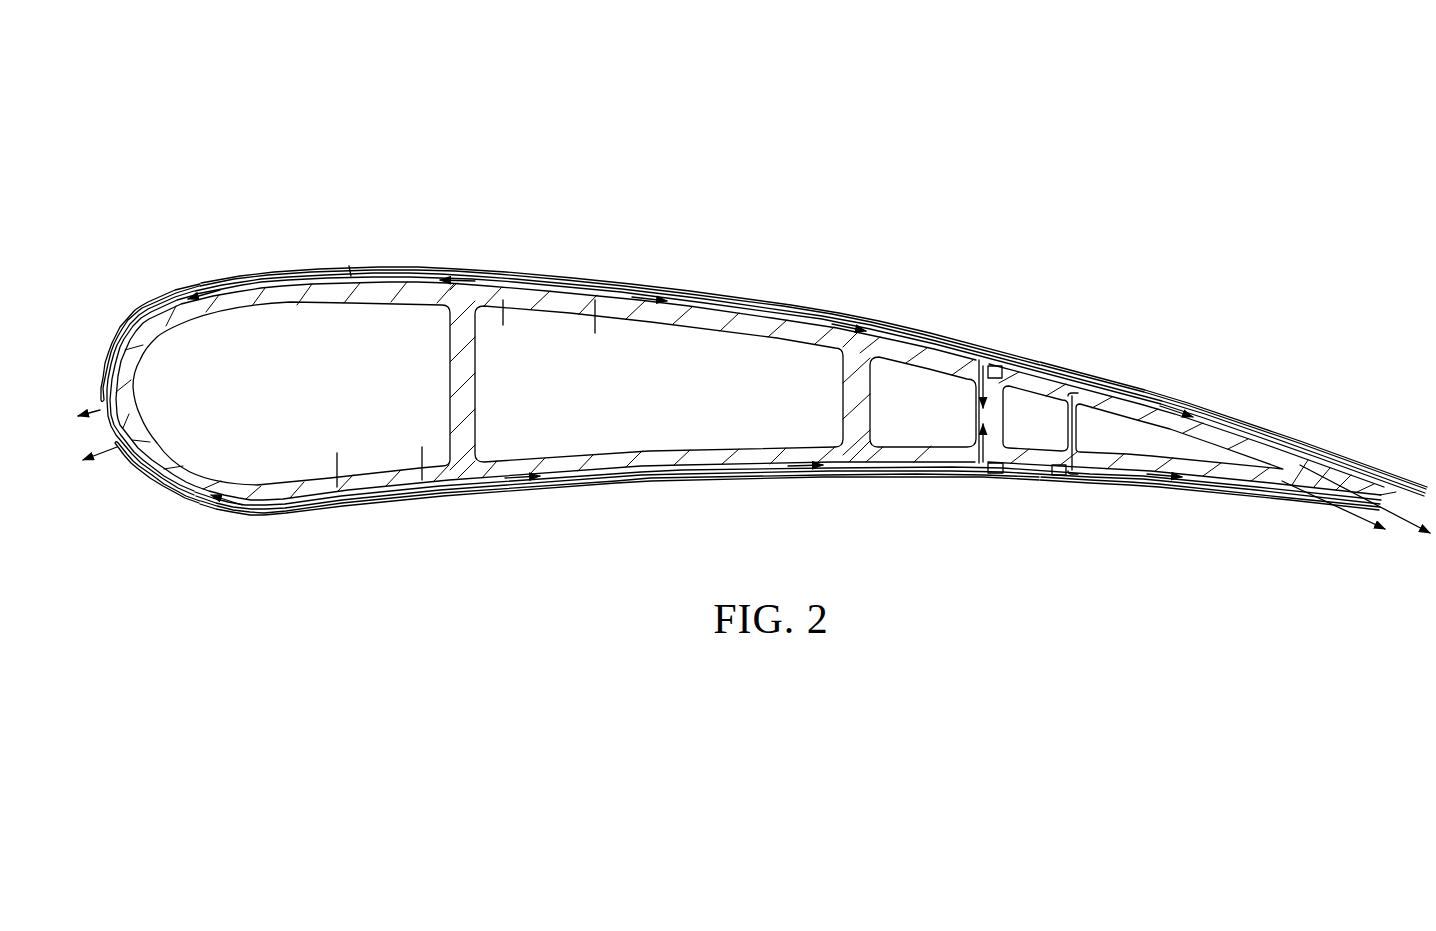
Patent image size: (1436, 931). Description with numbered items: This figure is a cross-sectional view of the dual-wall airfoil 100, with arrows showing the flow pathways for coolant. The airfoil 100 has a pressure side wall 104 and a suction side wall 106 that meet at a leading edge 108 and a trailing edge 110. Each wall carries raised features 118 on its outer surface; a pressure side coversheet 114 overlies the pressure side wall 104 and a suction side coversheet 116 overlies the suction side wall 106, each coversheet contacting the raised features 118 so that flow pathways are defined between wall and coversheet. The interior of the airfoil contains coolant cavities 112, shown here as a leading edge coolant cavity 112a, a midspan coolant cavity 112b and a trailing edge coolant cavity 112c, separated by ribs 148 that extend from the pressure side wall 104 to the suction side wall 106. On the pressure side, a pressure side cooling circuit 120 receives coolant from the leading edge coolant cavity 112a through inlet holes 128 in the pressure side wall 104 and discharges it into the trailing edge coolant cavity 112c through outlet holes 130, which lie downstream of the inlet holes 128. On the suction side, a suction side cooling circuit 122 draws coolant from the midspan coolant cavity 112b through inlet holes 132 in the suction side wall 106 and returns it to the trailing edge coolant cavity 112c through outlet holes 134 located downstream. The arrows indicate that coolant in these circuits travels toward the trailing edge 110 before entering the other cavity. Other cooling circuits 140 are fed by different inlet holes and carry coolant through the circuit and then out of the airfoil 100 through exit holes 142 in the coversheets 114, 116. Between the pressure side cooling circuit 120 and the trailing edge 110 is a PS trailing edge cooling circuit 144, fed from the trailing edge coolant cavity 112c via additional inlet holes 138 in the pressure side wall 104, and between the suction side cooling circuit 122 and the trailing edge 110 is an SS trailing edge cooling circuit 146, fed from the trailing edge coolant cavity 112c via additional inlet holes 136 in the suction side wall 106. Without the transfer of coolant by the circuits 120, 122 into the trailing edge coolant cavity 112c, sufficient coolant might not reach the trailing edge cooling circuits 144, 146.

The dual-wall airfoil 100 is at (747, 327).
The pressure side wall 104 is at (260, 483).
The suction side wall 106 is at (350, 282).
The leading edge 108 is at (152, 282).
The trailing edge 110 is at (1365, 440).
The coolant cavities 112 is at (708, 385).
The leading edge coolant cavity 112a is at (257, 403).
The midspan coolant cavity 112b is at (598, 396).
The trailing edge coolant cavity 112c is at (1017, 403).
The pressure side coversheet 114 is at (585, 485).
The suction side coversheet 116 is at (272, 282).
The raised features 118 is at (565, 297).
The pressure side cooling circuit 120 is at (405, 548).
The suction side cooling circuit 122 is at (583, 235).
The inlet holes 128 is at (420, 465).
The outlet holes 130 is at (990, 474).
The inlet holes 132 is at (592, 308).
The outlet holes 134 is at (985, 360).
The additional inlet holes 136 is at (1067, 405).
The additional inlet holes 138 is at (1065, 476).
The other cooling circuits 140 is at (745, 429).
The exit holes 142 is at (100, 406).
The PS trailing edge cooling circuit 144 is at (1373, 560).
The SS trailing edge cooling circuit 146 is at (1060, 355).
The ribs 148 is at (448, 350).